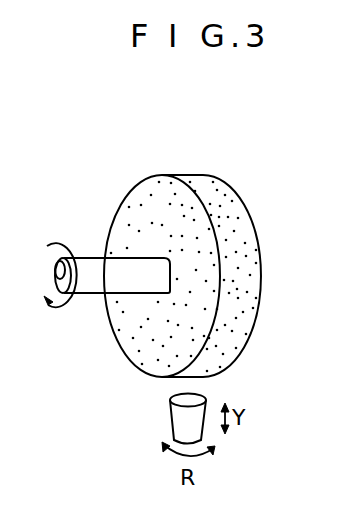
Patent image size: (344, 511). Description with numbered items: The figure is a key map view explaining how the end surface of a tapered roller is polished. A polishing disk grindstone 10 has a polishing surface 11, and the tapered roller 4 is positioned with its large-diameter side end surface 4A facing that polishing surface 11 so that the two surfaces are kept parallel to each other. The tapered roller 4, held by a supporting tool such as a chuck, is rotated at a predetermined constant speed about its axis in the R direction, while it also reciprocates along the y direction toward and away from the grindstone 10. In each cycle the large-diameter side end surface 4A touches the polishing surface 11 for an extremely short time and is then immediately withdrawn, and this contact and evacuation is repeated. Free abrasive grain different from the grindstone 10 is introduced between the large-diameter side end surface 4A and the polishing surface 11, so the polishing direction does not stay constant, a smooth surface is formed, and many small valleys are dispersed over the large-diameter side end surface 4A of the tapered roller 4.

The polishing disk grindstone 10 is at (120, 212).
The polishing surface 11 is at (198, 370).
The tapered roller 4 is at (183, 424).
The large-diameter side end surface 4A is at (178, 398).